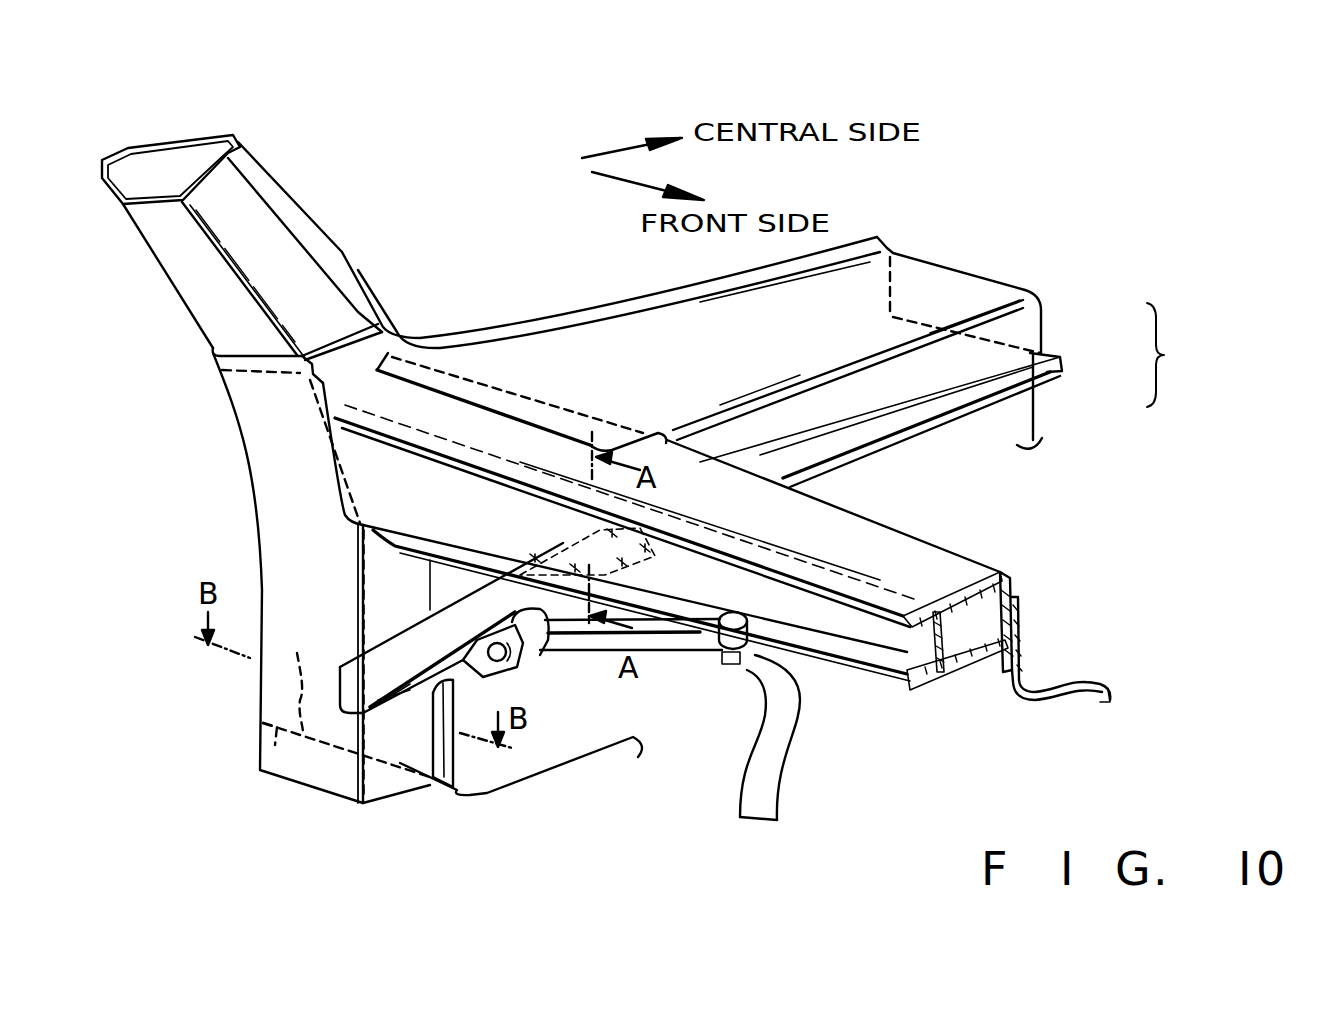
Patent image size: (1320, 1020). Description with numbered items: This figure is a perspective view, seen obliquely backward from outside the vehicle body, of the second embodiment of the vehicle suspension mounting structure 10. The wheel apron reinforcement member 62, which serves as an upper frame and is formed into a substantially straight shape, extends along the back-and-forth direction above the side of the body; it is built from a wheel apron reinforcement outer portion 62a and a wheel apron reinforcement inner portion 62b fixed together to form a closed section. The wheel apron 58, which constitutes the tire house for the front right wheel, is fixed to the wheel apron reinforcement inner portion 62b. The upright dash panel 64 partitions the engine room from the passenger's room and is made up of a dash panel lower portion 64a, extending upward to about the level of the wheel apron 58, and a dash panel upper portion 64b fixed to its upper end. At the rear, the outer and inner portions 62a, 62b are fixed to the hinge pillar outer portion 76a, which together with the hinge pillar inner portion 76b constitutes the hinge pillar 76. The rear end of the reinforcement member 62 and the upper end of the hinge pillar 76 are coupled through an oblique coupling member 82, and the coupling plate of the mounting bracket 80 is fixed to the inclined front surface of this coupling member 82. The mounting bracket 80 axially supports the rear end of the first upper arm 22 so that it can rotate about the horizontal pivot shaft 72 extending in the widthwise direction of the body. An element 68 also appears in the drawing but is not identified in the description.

The mounting structure 10 is at (465, 592).
The first upper arm 22 is at (690, 648).
The wheel apron 58 is at (1022, 670).
The wheel apron reinforcement member 62 is at (903, 533).
The wheel apron reinforcement outer portion 62a is at (897, 673).
The wheel apron reinforcement inner portion 62b is at (1005, 597).
The dash panel 64 is at (1178, 355).
The dash panel lower portion 64a is at (1037, 403).
The dash panel upper portion 64b is at (1037, 320).
The roof panel 68 is at (977, 277).
The horizontal pivot shaft 72 is at (513, 656).
The hinge pillar 76 is at (260, 690).
The hinge pillar outer portion 76a is at (310, 790).
The hinge pillar inner portion 76b is at (303, 677).
The mounting bracket 80 is at (442, 662).
The oblique coupling member 82 is at (430, 785).